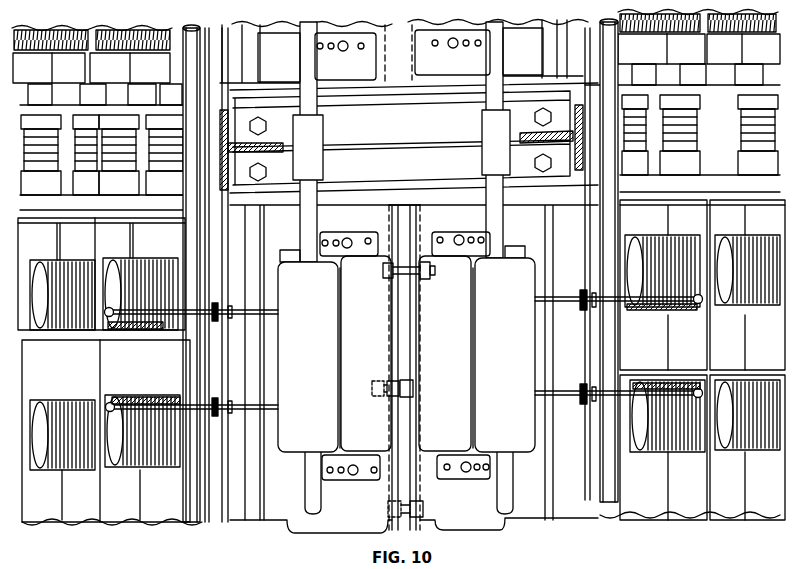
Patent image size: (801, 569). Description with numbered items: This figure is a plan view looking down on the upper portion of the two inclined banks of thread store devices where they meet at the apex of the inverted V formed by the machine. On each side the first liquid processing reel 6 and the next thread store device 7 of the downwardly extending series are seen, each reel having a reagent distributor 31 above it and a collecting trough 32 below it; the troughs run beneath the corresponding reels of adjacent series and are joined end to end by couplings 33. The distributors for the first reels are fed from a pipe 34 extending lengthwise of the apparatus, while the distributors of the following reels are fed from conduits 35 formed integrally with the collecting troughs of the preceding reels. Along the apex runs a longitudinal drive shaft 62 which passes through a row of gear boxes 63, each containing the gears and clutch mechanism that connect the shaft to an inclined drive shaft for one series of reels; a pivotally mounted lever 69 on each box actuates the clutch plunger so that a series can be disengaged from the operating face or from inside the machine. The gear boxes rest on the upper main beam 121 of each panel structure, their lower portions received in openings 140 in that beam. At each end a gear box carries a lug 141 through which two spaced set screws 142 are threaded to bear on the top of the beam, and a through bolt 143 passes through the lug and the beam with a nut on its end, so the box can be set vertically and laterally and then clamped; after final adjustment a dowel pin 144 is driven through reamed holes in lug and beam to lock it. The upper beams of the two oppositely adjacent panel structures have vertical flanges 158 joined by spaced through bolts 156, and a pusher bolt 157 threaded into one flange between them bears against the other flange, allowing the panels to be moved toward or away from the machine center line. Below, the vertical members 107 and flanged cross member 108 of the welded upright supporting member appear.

The thread store device 6 is at (648, 372).
The thread store device 7 is at (738, 372).
The reagent distributor 31 is at (46, 265).
The collecting trough 32 is at (742, 528).
The coupling 33 is at (47, 155).
The pipe 34 is at (232, 229).
The conduit 35 is at (46, 525).
The shaft 62 is at (301, 75).
The gear box 63 is at (364, 360).
The lever 69 is at (257, 311).
The vertical member 107 is at (262, 148).
The flanged cross member 108 is at (424, 138).
The upper main beam 121 is at (417, 206).
The opening 140 is at (298, 40).
The lug 141 is at (320, 50).
The set screw 142 is at (361, 50).
The through bolt 143 is at (453, 49).
The dowel pin 144 is at (466, 47).
The through bolt 156 is at (402, 276).
The pusher bolt 157 is at (406, 392).
The vertical flange 158 is at (398, 418).